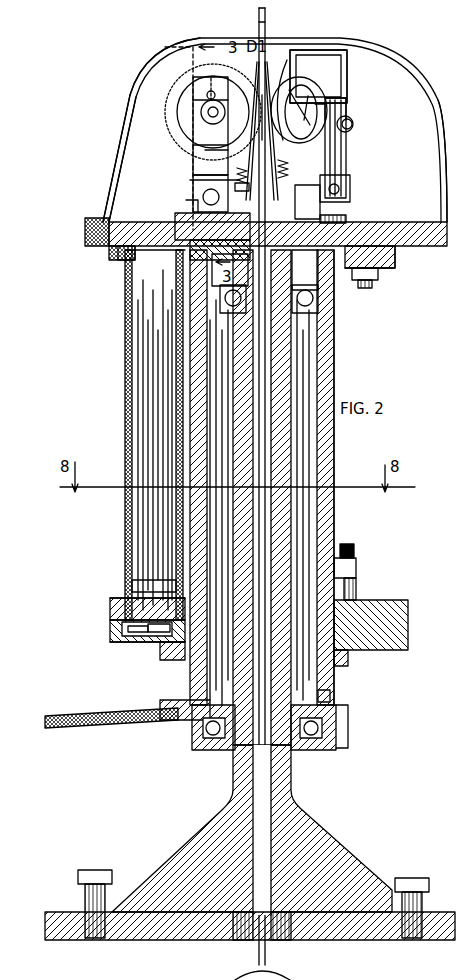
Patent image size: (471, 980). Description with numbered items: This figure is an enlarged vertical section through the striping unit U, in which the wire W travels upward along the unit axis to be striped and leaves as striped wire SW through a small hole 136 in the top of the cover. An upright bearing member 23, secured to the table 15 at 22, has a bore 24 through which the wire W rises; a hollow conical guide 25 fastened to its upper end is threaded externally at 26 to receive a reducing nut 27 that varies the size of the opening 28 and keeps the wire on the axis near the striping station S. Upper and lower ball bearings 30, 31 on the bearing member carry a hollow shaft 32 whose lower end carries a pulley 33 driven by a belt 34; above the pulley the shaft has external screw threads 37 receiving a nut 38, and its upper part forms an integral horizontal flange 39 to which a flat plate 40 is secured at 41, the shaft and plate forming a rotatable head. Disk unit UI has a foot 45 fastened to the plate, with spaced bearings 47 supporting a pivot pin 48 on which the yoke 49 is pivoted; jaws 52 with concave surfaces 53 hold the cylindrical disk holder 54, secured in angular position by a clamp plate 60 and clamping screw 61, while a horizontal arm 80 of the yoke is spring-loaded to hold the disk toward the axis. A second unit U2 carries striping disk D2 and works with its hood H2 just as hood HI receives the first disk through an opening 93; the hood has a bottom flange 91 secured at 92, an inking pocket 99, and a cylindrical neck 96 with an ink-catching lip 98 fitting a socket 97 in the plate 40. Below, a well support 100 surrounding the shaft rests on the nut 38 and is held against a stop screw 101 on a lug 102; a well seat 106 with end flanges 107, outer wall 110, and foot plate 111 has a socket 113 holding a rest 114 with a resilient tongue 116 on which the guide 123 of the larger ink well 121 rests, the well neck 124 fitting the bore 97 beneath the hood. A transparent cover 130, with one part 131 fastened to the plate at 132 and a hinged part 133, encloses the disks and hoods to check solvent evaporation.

The wire W is at (268, 835).
The cover 130 is at (117, 125).
The cover part 131 is at (118, 160).
The hinged cover part 133 is at (418, 92).
The inking pocket 99 is at (160, 78).
The hollow hood HI is at (143, 94).
The fastening of cover part 132 is at (88, 228).
The plate 40 is at (395, 236).
The horizontal flange 39 is at (380, 262).
The fastening of plate 41 is at (370, 284).
The bottom flange 91 is at (112, 248).
The fastening of hood flange 92 is at (124, 254).
The clamping screw 61 is at (205, 115).
The clamp plate 60 is at (232, 86).
The disk carrier or yoke 49 is at (204, 99).
The opening 93 is at (340, 54).
The reducing nut 27 is at (200, 198).
The lip 98 is at (190, 182).
The cylindrical neck 96 is at (188, 212).
The disk unit UI is at (202, 149).
The foot 45 is at (182, 232).
The bore or socket 97 is at (188, 256).
The well neck 124 is at (128, 262).
The striping station S is at (270, 110).
The opening 28 is at (260, 115).
The horizontal arm 80 is at (242, 166).
The external threads 26 is at (305, 194).
The disk holder 54 is at (290, 75).
The parti-cylindrical surface 53 is at (302, 92).
The striping disk D2 is at (320, 78).
The disk unit U2 is at (338, 98).
The hollow hood H2 is at (346, 104).
The jaw 52 is at (354, 126).
The bearings 47 is at (342, 182).
The pivot pin 48 is at (340, 189).
The hole 136 is at (258, 26).
The striped wire SW is at (268, 24).
The hollow shaft 32 is at (326, 504).
The striping unit U is at (326, 352).
The hollow conical guide 25 is at (305, 270).
The upper ball bearing 30 is at (316, 305).
The upright bearing member 23 is at (292, 776).
The bore 24 is at (236, 770).
The larger ink well 121 is at (126, 394).
The guide 123 is at (138, 596).
The end flanges 107 is at (112, 598).
The front or outer wall 110 is at (112, 606).
The well seat 106 is at (120, 630).
The foot plate 111 is at (130, 640).
The hole or socket 113 is at (140, 634).
The rest 114 is at (158, 634).
The resilient tongue 116 is at (172, 652).
The external screw threads 37 is at (190, 676).
The belt 34 is at (124, 726).
The pulley 33 is at (338, 740).
The lower ball bearing 31 is at (328, 700).
The nut 38 is at (342, 664).
The well support 100 is at (385, 614).
The stop or positioning screw 101 is at (358, 590).
The lug 102 is at (356, 568).
The table 15 is at (60, 912).
The fastening of bearing member 22 is at (95, 872).